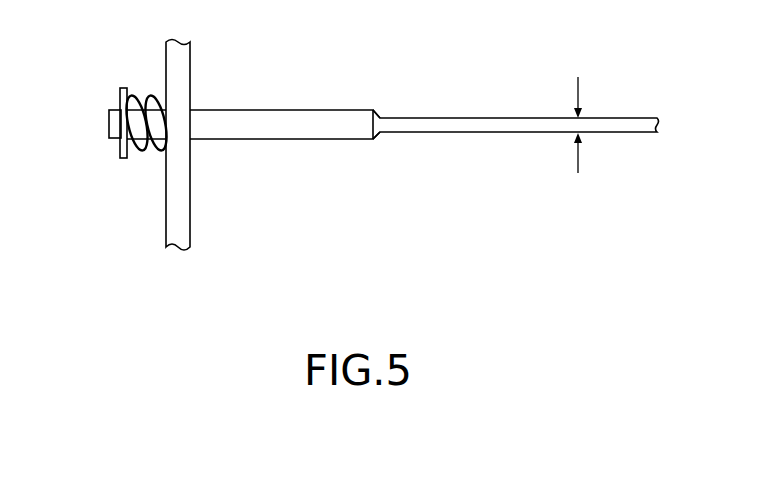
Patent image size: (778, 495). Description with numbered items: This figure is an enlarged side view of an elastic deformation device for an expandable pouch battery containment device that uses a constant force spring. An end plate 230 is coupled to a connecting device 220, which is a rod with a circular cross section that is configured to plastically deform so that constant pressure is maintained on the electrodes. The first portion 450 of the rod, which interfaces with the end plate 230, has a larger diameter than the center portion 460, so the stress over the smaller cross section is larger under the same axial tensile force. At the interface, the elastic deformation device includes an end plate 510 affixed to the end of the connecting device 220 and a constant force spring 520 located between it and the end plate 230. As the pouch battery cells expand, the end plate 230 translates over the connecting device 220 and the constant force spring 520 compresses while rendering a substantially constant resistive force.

The connecting device 220 is at (339, 122).
The end plate 230 is at (185, 60).
The first portion 450 is at (389, 103).
The center portion 460 is at (578, 124).
The end plate 510 is at (114, 177).
The constant force spring 520 is at (146, 170).